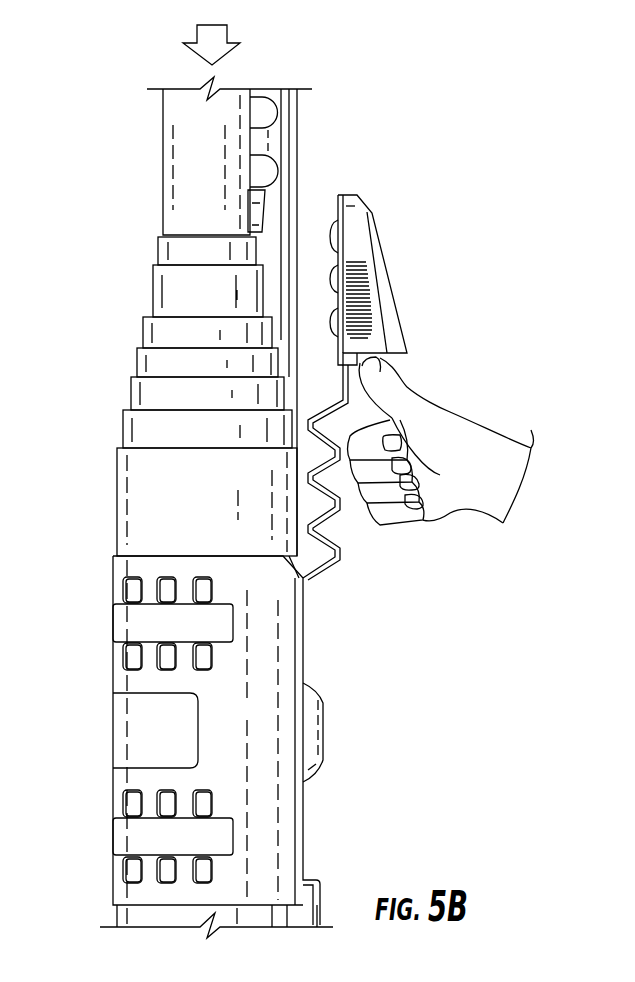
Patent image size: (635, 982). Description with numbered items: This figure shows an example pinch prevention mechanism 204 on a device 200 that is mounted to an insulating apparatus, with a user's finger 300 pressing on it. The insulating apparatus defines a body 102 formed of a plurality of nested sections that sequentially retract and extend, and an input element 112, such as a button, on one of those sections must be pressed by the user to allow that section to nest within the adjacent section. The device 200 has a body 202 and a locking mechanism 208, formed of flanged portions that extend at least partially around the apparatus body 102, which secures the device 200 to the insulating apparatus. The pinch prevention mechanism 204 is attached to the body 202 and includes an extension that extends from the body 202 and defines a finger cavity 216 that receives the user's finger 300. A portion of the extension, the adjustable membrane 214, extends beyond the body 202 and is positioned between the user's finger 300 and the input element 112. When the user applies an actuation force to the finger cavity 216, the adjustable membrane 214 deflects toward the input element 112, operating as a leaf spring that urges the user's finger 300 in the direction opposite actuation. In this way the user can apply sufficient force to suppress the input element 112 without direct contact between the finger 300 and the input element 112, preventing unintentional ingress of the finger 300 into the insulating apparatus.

The body 102 is at (139, 336).
The input element 112 is at (274, 203).
The device 200 is at (277, 741).
The body 202 is at (266, 802).
The pinch prevention mechanism 204 is at (460, 365).
The locking mechanism 208 is at (93, 555).
The adjustable membrane 214 is at (341, 554).
The finger cavity 216 is at (374, 250).
The user's finger 300 is at (444, 422).